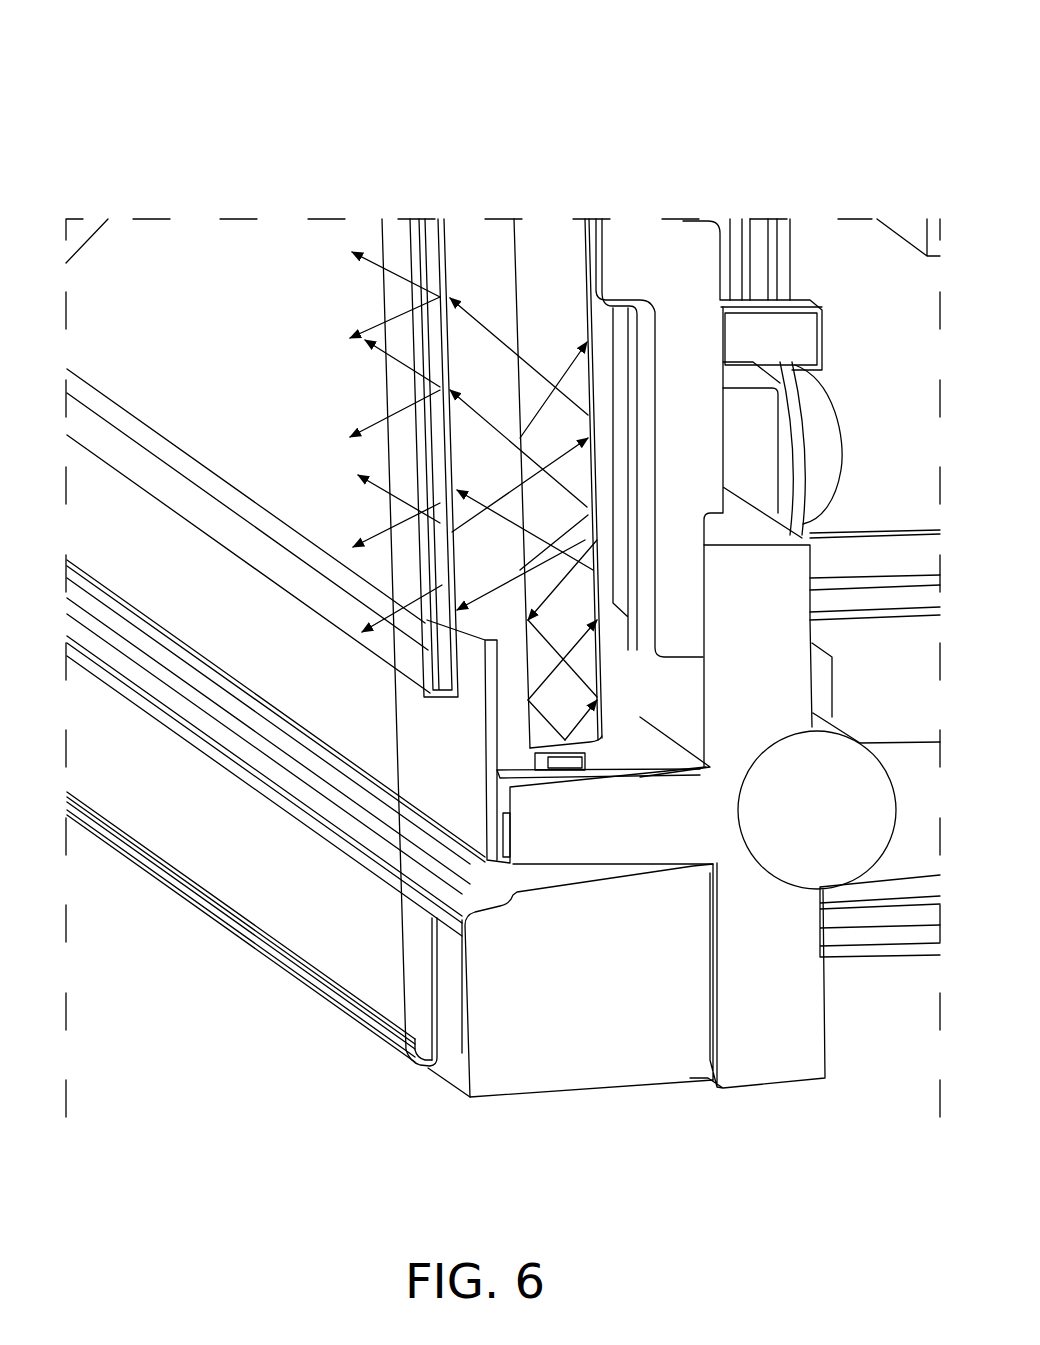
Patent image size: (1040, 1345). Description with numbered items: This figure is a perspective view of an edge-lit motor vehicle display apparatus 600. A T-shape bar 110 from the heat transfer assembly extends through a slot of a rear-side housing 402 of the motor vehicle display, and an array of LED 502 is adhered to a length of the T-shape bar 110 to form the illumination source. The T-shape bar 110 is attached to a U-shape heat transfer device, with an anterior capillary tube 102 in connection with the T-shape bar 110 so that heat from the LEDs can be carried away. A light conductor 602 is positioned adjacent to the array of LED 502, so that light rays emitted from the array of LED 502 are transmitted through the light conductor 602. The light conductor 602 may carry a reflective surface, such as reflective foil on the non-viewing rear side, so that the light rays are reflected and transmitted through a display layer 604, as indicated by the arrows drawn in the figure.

The edge-lit motor vehicle display apparatus 600 is at (150, 124).
The light conductor 602 is at (545, 238).
The rear-side housing 402 is at (768, 235).
The display layer 604 is at (259, 389).
The anterior capillary tube 102 is at (840, 827).
The T-shape bar 110 is at (783, 1005).
The array of LED 502 is at (553, 773).